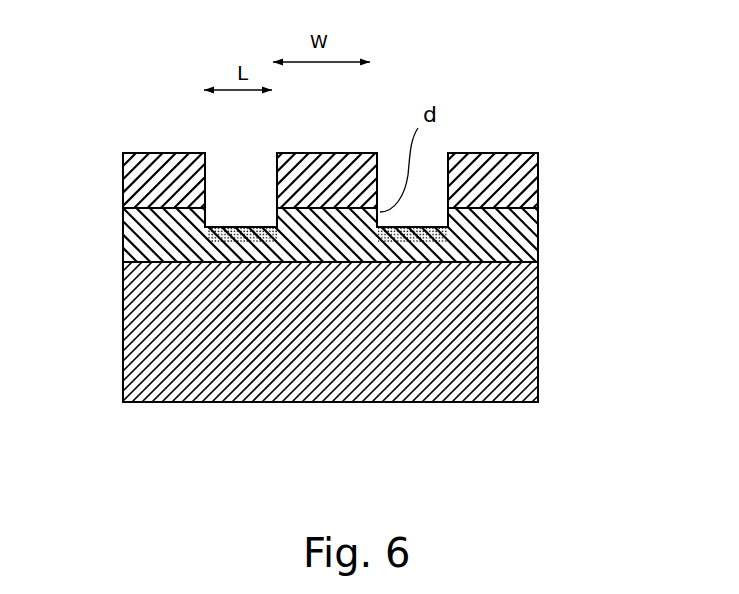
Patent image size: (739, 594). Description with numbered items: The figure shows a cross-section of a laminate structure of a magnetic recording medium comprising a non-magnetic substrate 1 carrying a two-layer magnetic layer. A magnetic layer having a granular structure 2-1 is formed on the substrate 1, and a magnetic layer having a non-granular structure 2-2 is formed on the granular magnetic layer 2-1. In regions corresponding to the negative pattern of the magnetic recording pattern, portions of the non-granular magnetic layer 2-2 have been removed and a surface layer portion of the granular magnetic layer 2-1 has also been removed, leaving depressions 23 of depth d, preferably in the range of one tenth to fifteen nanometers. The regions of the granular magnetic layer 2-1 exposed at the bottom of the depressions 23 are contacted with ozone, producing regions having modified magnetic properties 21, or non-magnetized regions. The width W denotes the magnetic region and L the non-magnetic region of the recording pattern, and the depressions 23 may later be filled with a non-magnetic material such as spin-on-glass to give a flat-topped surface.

The non-magnetic substrate 1 is at (528, 328).
The magnetic layer having a granular structure 2-1 is at (532, 238).
The magnetic layer having a non-granular structure 2-2 is at (533, 178).
The regions having modified magnetic properties 21 is at (207, 233).
The depressions 23 is at (427, 165).